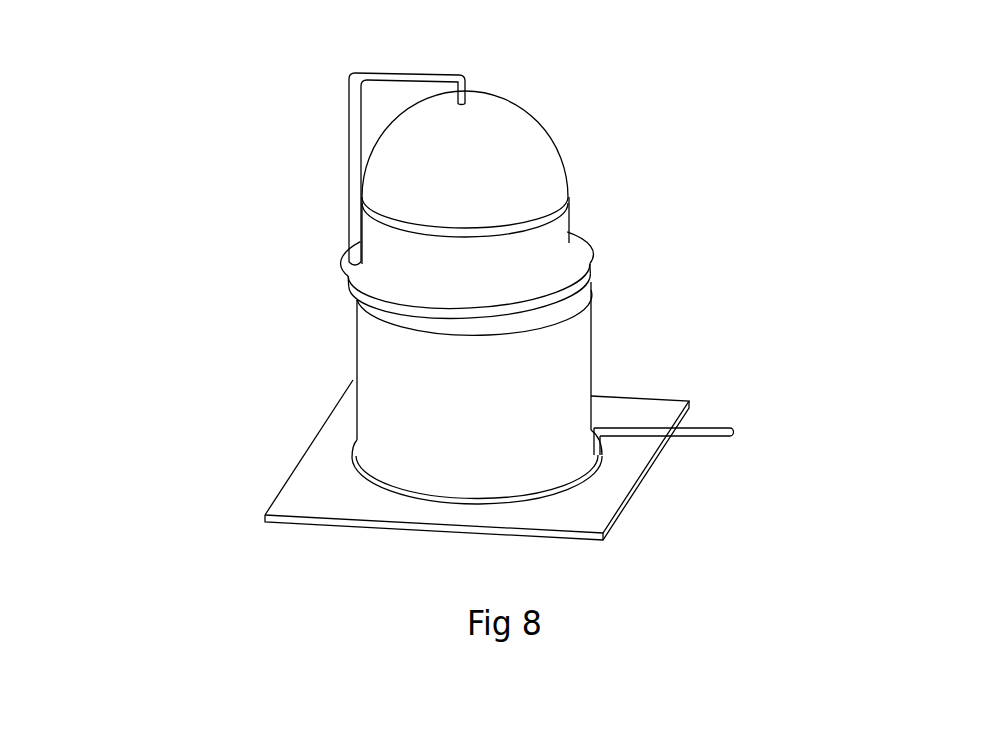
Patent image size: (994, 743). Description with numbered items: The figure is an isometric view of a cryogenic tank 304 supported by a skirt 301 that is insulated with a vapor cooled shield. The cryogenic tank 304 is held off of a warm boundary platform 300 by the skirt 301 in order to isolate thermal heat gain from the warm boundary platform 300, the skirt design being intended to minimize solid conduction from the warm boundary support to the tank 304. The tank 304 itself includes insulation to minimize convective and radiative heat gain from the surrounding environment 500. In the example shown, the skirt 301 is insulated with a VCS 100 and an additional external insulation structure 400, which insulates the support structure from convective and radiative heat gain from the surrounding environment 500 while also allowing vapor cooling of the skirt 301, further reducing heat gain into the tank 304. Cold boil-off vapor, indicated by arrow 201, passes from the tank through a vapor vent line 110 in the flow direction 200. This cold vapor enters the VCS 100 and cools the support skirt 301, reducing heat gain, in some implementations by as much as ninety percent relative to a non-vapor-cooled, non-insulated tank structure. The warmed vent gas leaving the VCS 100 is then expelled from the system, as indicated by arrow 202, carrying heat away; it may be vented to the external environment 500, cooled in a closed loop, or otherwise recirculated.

The VCS 100 is at (624, 288).
The vapor vent line 110 is at (348, 110).
The flow direction 200 is at (322, 152).
The arrow indicating cold boil-off vapor 201 is at (437, 53).
The arrow indicating expelled vent gas 202 is at (742, 435).
The warm boundary platform 300 is at (573, 518).
The skirt 301 is at (355, 363).
The cryogenic tank 304 is at (572, 227).
The external insulation structure 400 is at (547, 150).
The surrounding environment 500 is at (148, 205).